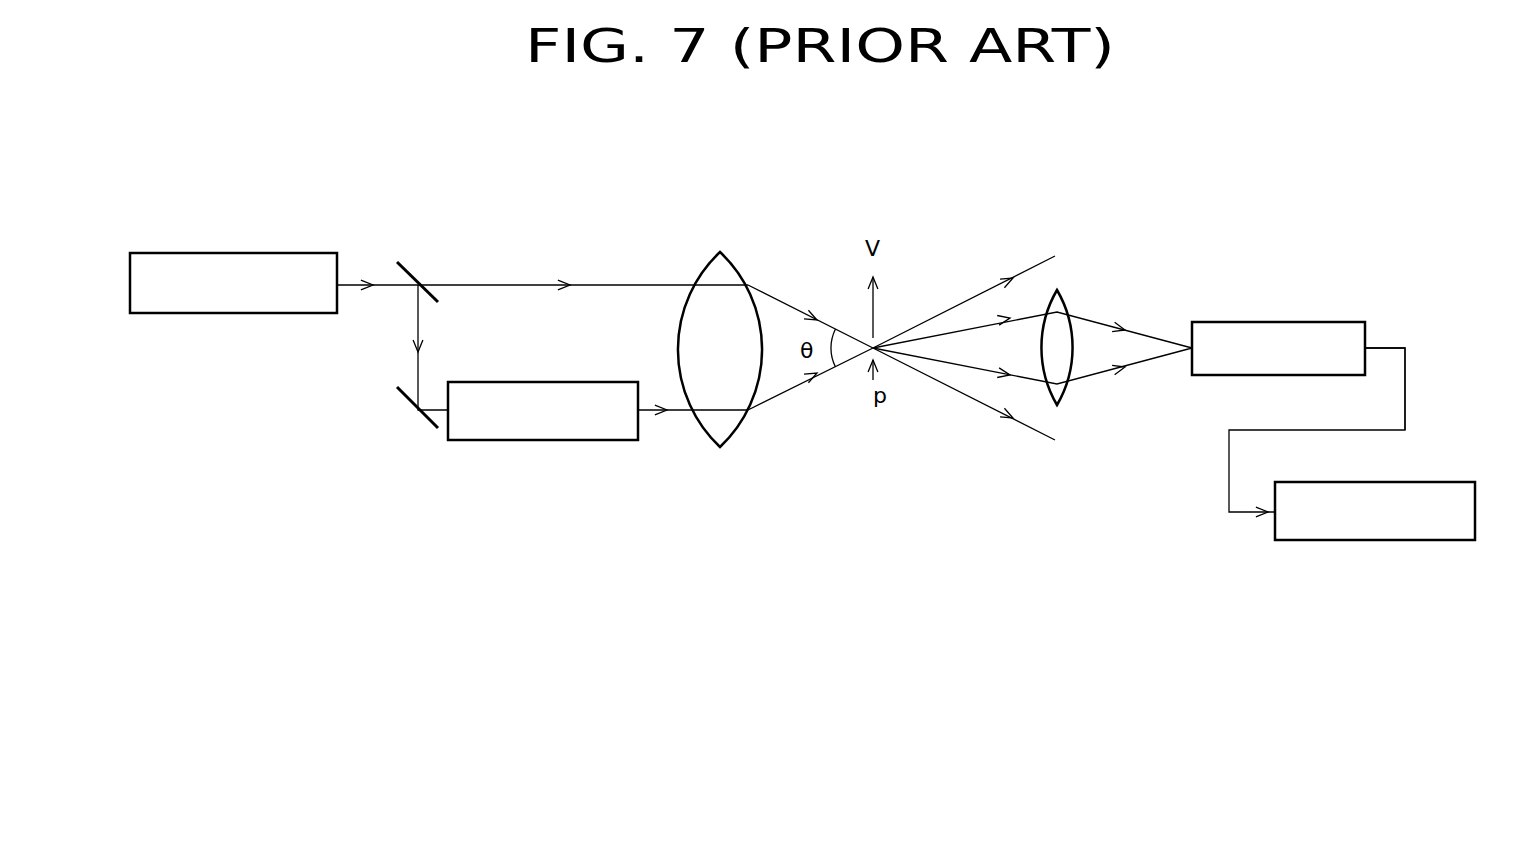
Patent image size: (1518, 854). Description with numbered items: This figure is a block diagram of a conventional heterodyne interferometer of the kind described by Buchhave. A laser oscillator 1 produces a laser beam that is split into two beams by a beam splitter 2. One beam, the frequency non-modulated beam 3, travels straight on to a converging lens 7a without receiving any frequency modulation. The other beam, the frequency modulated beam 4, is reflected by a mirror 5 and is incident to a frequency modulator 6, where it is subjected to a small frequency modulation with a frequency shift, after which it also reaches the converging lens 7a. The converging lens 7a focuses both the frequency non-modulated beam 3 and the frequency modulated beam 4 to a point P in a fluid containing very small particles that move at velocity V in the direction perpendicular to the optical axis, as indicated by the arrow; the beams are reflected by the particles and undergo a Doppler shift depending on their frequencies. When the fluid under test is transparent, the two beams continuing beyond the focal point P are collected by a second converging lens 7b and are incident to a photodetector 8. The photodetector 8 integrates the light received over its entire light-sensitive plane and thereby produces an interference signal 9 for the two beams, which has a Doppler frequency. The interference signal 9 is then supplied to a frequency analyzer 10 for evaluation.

The laser oscillator 1 is at (279, 253).
The beam splitter 2 is at (412, 270).
The frequency non-modulated beam 3 is at (513, 283).
The frequency modulated beam 4 is at (418, 373).
The mirror 5 is at (405, 398).
The frequency modulator 6 is at (592, 440).
The converging lens 7a is at (738, 268).
The converging lens 7b is at (1068, 300).
The photodetector 8 is at (1305, 322).
The interference signal 9 is at (1397, 348).
The frequency analyzer 10 is at (1400, 540).